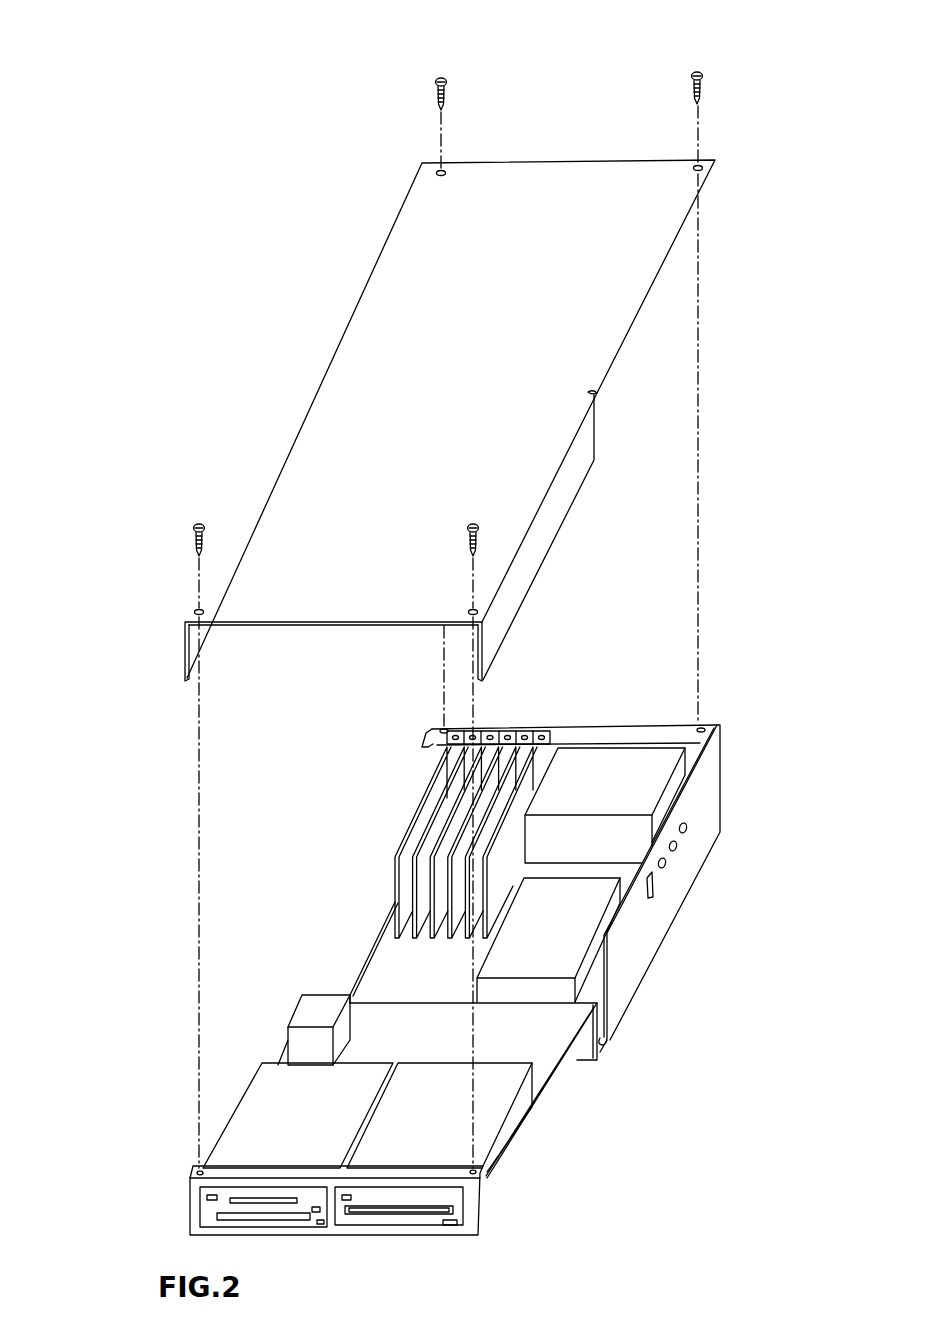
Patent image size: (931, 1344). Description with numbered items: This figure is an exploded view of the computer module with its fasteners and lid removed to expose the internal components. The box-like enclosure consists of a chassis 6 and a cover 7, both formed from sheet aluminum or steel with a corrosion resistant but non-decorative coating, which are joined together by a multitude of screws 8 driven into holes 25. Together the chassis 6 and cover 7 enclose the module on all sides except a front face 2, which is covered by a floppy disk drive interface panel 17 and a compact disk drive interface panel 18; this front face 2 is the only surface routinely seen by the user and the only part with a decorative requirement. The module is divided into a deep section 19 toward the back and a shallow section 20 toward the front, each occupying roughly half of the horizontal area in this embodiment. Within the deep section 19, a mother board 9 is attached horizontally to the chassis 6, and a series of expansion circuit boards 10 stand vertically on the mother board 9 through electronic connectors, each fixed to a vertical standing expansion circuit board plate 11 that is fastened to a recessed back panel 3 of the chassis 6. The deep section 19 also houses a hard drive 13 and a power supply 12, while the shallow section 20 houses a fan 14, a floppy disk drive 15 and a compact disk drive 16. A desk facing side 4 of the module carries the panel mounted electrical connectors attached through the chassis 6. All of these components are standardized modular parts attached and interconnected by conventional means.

The front face 2 is at (313, 1237).
The recessed back panel 3 is at (553, 748).
The desk facing side 4 is at (681, 889).
The chassis 6 is at (662, 917).
The cover 7 is at (400, 392).
The screws 8 is at (703, 72).
The mother board 9 is at (550, 870).
The expansion circuit boards 10 is at (440, 842).
The expansion circuit board plate 11 is at (520, 748).
The power supply 12 is at (598, 785).
The hard drive 13 is at (567, 933).
The fan 14 is at (308, 1015).
The floppy disk drive 15 is at (262, 1137).
The compact disk drive 16 is at (485, 1121).
The floppy disk drive interface panel 17 is at (210, 1210).
The compact disk drive interface panel 18 is at (383, 1222).
The deep section 19 is at (690, 936).
The shallow section 20 is at (563, 1126).
The holes 25 is at (711, 726).